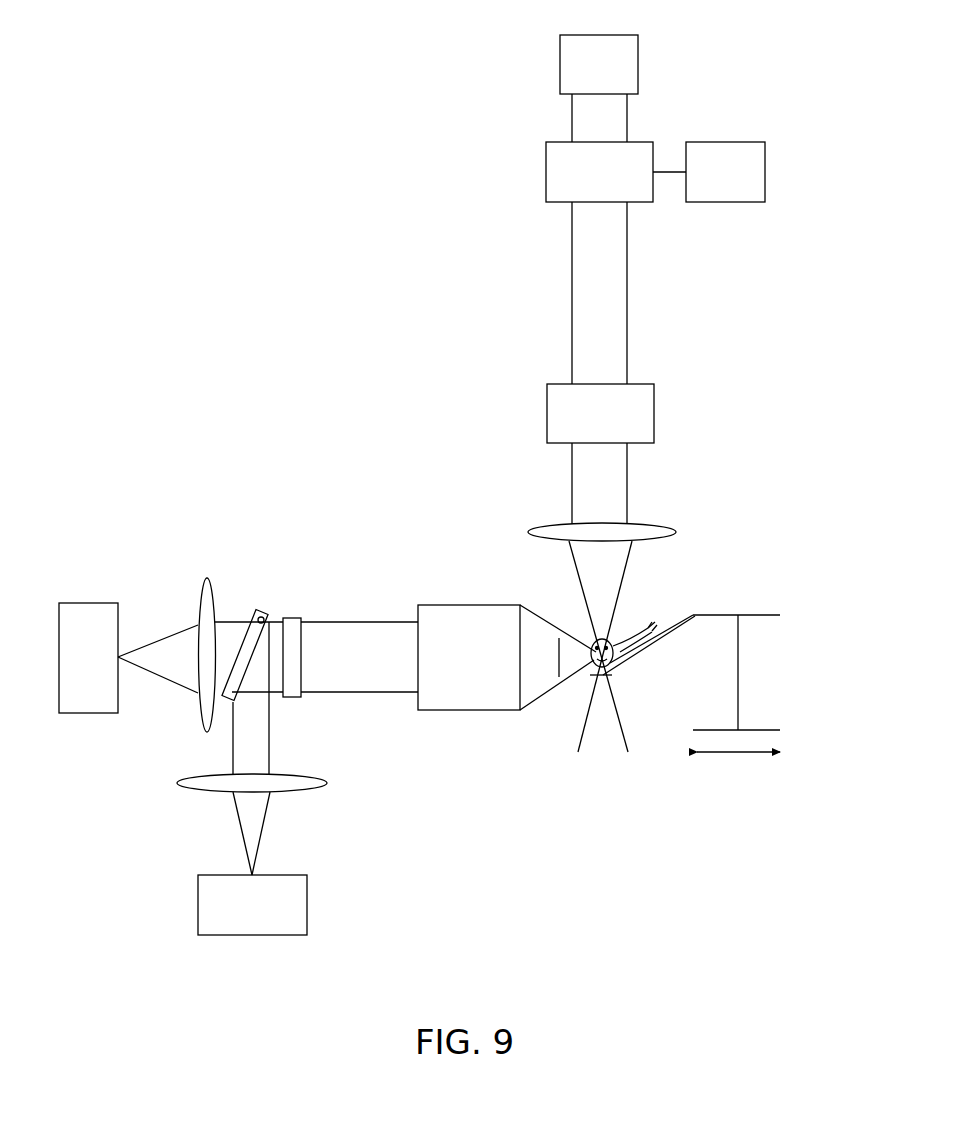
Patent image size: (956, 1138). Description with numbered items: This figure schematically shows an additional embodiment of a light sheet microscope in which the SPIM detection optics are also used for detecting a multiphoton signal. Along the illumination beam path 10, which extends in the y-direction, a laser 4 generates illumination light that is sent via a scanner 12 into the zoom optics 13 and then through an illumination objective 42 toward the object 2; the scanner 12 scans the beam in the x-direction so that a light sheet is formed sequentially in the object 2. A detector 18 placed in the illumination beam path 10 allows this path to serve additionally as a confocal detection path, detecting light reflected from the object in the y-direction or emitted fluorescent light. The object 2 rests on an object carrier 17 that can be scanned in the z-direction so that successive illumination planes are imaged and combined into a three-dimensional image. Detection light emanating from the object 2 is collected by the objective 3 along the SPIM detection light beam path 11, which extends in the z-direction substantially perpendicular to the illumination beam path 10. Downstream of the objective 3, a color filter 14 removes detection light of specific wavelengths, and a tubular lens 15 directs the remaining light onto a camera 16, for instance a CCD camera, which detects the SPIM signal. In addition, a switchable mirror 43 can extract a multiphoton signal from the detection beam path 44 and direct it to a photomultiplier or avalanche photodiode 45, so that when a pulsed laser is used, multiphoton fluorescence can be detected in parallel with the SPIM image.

The illumination beam path 10 is at (441, 70).
The detector 18 is at (638, 65).
The scanner 12 is at (546, 173).
The laser 4 is at (765, 172).
The zoom optics 13 is at (654, 412).
The illumination objective 42 is at (676, 529).
The object 2 is at (645, 625).
The object carrier 17 is at (725, 615).
The objective 3 is at (475, 605).
The SPIM-detection light beam path 11 is at (334, 534).
The detection beam path 44 is at (363, 692).
The color filter 14 is at (293, 618).
The switchable mirror 43 is at (255, 630).
The tubular lens 15 is at (208, 580).
The camera 16 is at (90, 603).
The photomultiplier or Avalanche photodiode 45 is at (255, 935).